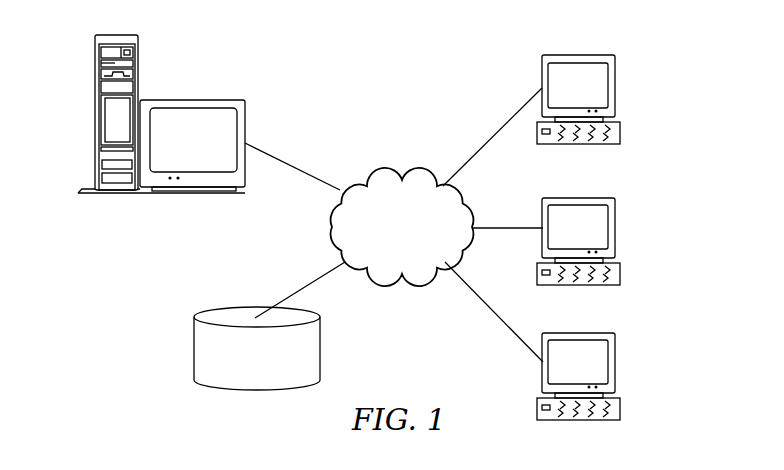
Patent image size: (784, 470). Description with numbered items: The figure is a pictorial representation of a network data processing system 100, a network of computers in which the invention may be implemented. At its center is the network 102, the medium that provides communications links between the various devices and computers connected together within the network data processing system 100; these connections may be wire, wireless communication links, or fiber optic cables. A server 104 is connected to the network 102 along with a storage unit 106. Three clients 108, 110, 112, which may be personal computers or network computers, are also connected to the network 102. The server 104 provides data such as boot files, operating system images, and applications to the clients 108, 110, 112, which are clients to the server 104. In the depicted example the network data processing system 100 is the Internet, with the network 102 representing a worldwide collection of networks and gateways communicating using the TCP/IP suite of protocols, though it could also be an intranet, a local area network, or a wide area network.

The network data processing system 100 is at (455, 63).
The network 102 is at (372, 180).
The server 104 is at (94, 118).
The storage unit 106 is at (194, 348).
The client 108 is at (615, 86).
The client 110 is at (615, 227).
The client 112 is at (615, 365).